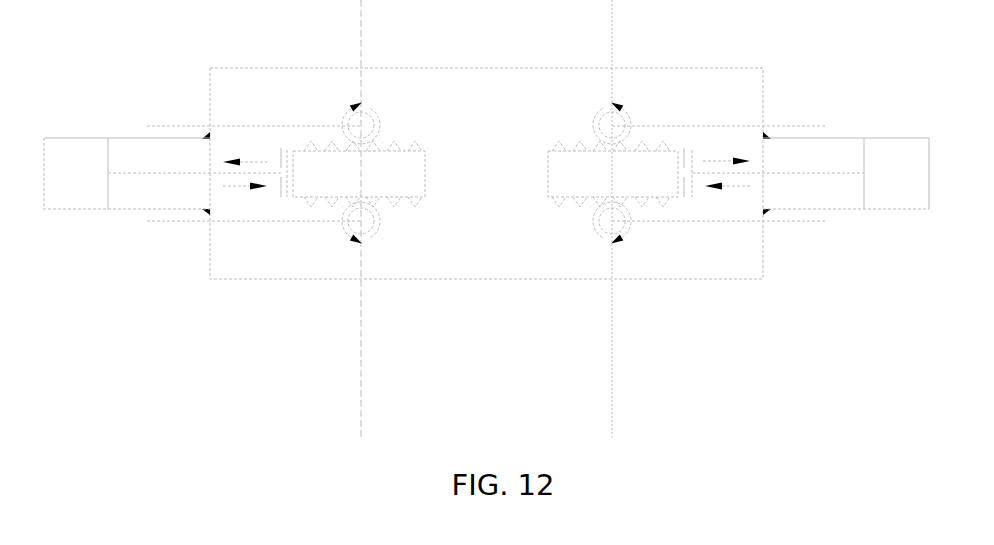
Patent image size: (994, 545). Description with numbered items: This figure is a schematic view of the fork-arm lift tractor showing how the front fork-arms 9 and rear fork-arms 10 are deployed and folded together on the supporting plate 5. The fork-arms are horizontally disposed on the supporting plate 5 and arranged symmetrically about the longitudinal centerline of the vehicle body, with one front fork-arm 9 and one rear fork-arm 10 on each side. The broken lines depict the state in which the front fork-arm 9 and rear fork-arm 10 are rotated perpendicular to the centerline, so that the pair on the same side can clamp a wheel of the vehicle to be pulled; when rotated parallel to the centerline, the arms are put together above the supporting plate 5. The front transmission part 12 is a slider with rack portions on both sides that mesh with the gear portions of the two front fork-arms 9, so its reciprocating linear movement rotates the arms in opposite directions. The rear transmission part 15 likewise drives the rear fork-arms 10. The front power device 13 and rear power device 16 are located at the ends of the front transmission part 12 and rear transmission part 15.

The supporting plate 5 is at (479, 83).
The front fork-arm 9 is at (175, 126).
The rear fork-arm 10 is at (785, 126).
The front transmission part 12 is at (408, 168).
The front power device 13 is at (71, 150).
The rear transmission part 15 is at (562, 167).
The rear power device 16 is at (893, 148).